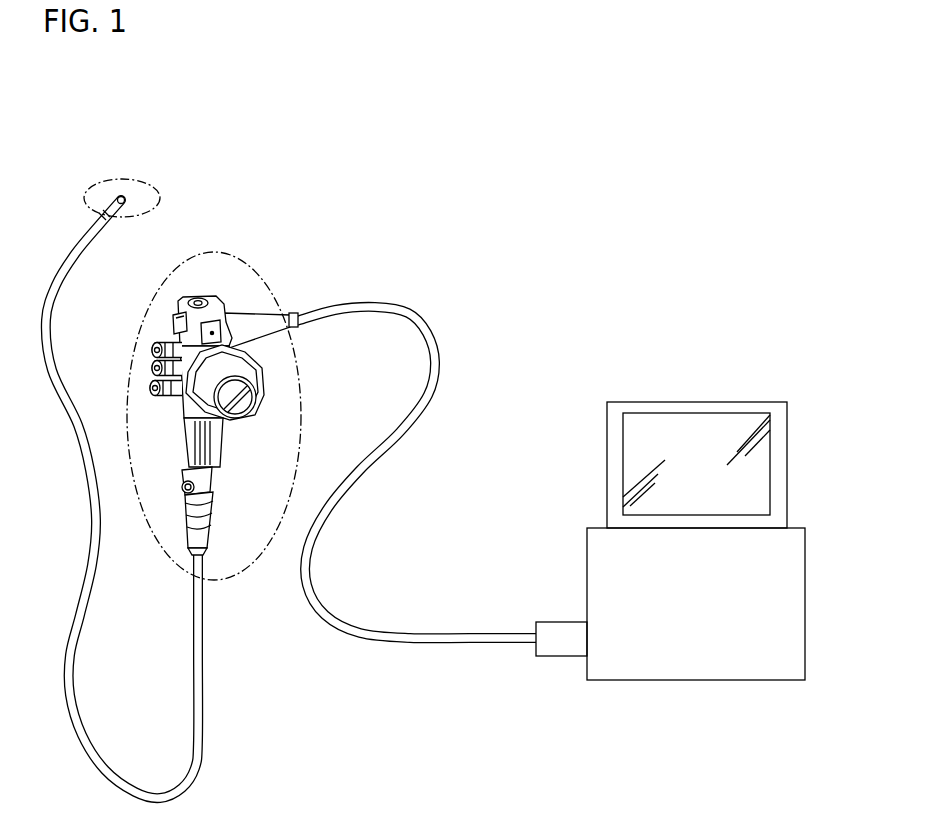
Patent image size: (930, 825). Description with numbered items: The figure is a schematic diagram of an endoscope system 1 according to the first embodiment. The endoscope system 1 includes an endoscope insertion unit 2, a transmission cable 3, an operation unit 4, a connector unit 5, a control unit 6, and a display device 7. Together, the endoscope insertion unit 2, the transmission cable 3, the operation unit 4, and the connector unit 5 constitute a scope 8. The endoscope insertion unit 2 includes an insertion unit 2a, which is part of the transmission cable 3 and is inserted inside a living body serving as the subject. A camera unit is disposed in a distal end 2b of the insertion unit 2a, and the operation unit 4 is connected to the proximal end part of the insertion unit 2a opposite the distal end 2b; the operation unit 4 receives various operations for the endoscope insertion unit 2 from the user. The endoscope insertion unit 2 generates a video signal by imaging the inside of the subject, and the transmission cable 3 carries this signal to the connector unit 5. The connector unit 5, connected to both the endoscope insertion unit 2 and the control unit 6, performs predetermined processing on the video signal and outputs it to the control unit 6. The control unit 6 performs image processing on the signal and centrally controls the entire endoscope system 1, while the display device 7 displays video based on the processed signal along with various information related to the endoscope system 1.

The endoscope system 1 is at (626, 168).
The endoscope insertion unit 2 is at (102, 118).
The insertion unit 2a is at (88, 249).
The distal end 2b is at (121, 178).
The transmission cable 3 is at (373, 296).
The operation unit 4 is at (250, 262).
The connector unit 5 is at (556, 622).
The control unit 6 is at (694, 682).
The display device 7 is at (697, 400).
The scope 8 is at (367, 166).